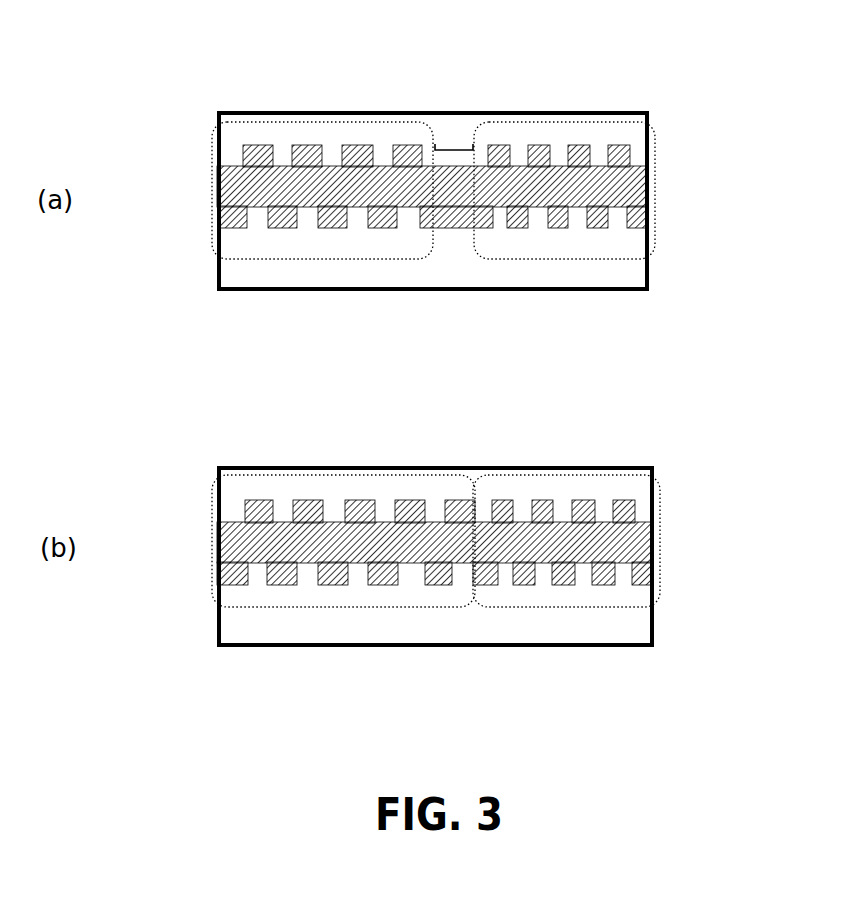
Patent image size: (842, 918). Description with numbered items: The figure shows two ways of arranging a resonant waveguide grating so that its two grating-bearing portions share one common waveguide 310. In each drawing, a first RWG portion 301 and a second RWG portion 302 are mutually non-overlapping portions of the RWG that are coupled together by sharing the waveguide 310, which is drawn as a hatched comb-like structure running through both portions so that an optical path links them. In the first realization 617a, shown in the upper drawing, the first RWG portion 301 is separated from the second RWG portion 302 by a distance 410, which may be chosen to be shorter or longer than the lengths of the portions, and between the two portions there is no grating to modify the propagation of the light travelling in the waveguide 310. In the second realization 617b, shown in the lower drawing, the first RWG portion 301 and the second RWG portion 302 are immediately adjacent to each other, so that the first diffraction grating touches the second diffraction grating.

The first RWG portion 301 is at (343, 431).
The second RWG portion 302 is at (566, 431).
The waveguide 310 is at (217, 180).
The distance 410 is at (473, 94).
The first realization of the RWG 617a is at (714, 162).
The second realization of the RWG 617b is at (720, 519).